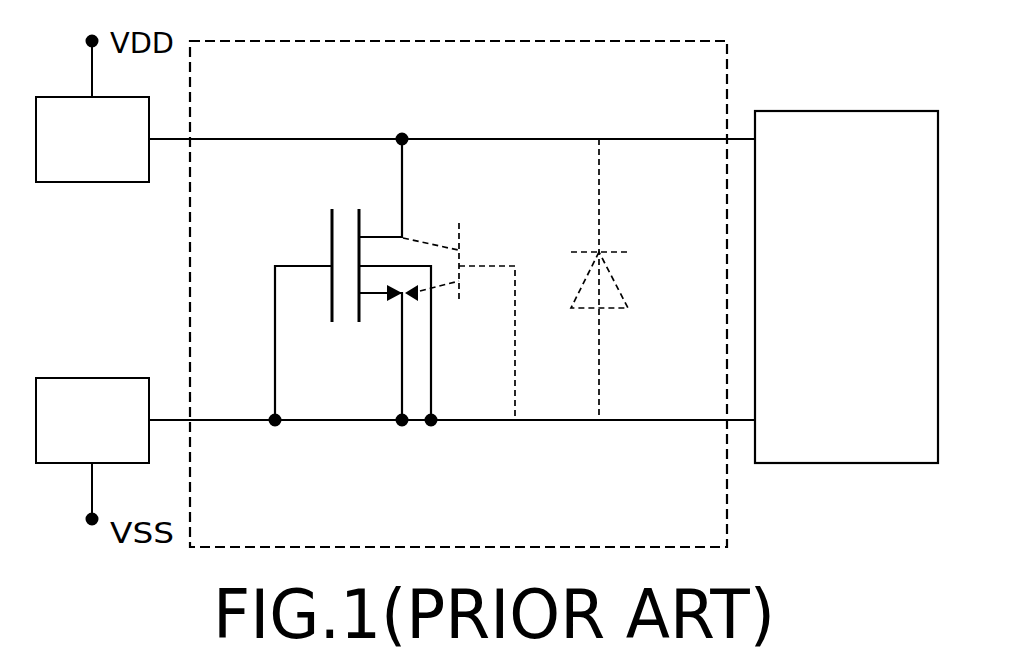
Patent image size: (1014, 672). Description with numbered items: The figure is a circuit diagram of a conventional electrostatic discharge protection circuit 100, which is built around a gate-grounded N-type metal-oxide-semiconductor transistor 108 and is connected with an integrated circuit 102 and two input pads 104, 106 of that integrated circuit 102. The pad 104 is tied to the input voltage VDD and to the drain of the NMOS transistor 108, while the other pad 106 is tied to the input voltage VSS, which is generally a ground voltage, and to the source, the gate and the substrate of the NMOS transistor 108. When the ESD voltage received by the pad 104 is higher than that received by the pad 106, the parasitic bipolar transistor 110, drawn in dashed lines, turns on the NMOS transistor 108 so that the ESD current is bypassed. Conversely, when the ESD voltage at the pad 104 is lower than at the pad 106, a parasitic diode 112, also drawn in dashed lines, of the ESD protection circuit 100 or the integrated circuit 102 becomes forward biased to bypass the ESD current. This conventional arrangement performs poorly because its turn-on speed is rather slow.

The ESD protection circuit 100 is at (727, 492).
The integrated circuit 102 is at (846, 287).
The pad 104 is at (92, 139).
The pad 106 is at (92, 420).
The NMOS transistor 108 is at (332, 221).
The parasitic bipolar transistor 110 is at (459, 223).
The parasitic diode 112 is at (603, 250).